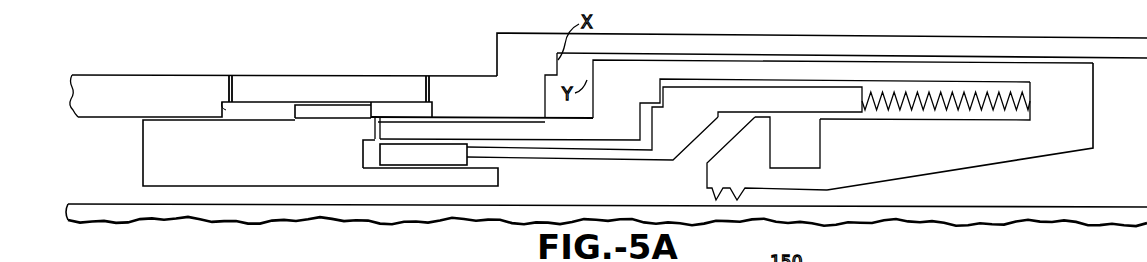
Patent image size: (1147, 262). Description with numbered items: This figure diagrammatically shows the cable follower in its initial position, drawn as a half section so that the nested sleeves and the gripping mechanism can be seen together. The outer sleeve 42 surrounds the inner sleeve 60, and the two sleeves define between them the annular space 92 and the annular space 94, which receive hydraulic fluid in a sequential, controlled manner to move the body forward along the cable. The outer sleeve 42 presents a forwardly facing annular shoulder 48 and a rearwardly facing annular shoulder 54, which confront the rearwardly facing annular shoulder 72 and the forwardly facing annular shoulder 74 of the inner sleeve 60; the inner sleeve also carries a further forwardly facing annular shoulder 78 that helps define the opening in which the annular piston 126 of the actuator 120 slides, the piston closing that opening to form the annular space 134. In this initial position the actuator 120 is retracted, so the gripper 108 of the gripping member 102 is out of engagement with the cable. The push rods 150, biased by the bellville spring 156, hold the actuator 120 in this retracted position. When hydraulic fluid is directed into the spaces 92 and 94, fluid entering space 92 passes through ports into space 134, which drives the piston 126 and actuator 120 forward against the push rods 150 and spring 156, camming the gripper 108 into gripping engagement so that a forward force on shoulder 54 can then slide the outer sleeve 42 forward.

The outer sleeve 42 is at (682, 34).
The annular shoulder 48 is at (225, 78).
The annular shoulder 54 is at (422, 116).
The inner sleeve 60 is at (142, 154).
The annular shoulder 72 is at (288, 117).
The annular shoulder 74 is at (380, 100).
The annular shoulder 78 is at (373, 137).
The annular space 92 is at (406, 105).
The annular space 94 is at (265, 110).
The gripping member 102 is at (968, 173).
The gripper 108 is at (759, 153).
The actuator 120 is at (597, 164).
The annular piston 126 is at (445, 150).
The annular space 134 is at (369, 157).
The push rods 150 is at (814, 94).
The bellville spring 156 is at (922, 93).